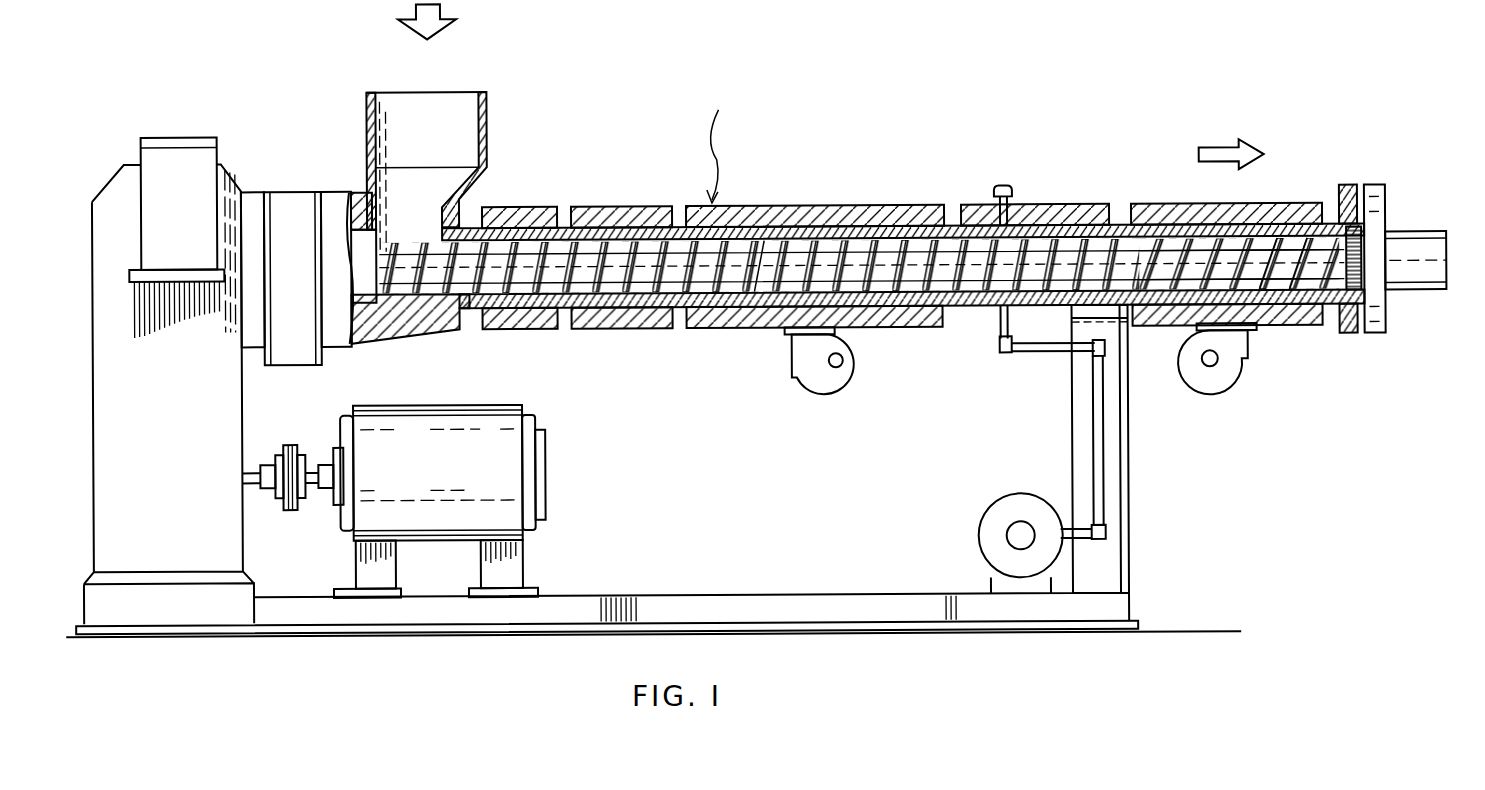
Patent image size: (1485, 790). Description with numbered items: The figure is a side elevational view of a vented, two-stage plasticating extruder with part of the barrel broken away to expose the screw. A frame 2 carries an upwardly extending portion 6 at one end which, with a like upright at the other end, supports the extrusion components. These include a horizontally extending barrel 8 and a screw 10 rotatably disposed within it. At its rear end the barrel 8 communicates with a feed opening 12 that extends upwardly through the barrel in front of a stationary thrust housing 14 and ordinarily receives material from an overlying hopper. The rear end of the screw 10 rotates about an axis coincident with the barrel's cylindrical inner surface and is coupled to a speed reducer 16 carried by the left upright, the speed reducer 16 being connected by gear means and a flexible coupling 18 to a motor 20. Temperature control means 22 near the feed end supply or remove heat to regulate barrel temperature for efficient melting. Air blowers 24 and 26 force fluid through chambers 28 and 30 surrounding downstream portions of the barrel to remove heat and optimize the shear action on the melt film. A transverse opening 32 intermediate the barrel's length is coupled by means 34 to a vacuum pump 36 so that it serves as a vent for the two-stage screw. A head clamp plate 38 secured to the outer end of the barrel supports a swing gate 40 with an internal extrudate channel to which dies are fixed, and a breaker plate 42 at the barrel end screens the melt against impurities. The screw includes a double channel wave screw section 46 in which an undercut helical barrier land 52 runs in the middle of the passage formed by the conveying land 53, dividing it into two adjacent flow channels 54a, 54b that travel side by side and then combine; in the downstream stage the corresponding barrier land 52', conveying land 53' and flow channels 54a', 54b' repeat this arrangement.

The frame 2 is at (459, 635).
The upwardly extending portion 6 is at (1130, 569).
The barrel 8 is at (470, 230).
The screw 10 is at (648, 300).
The feed opening 12 is at (418, 105).
The stationary thrust housing 14 is at (367, 108).
The speed reducer 16 is at (182, 138).
The flexible coupling 18 is at (290, 445).
The motor 20 is at (522, 497).
The temperature control means 22 is at (548, 210).
The air blower 24 is at (820, 398).
The air blower 26 is at (1243, 366).
The chamber 28 is at (880, 204).
The chamber 30 is at (1165, 204).
The transverse opening 32 is at (1005, 184).
The coupling means 34 is at (1105, 447).
The vacuum pump 36 is at (996, 556).
The head clamp plate 38 is at (1365, 232).
The swing gate 40 is at (1388, 314).
The breaker plate 42 is at (1342, 192).
The double channel wave screw section 46 is at (716, 141).
The undercut helical barrier land 52 is at (862, 274).
The conveying land 53 is at (862, 201).
The flow channel 54a is at (862, 325).
The flow channel 54b is at (744, 334).
The screw flight 52' is at (1288, 217).
The screw flight section 53' is at (1238, 188).
The flight face 54a' is at (1363, 214).
The flight face 54b' is at (1317, 303).